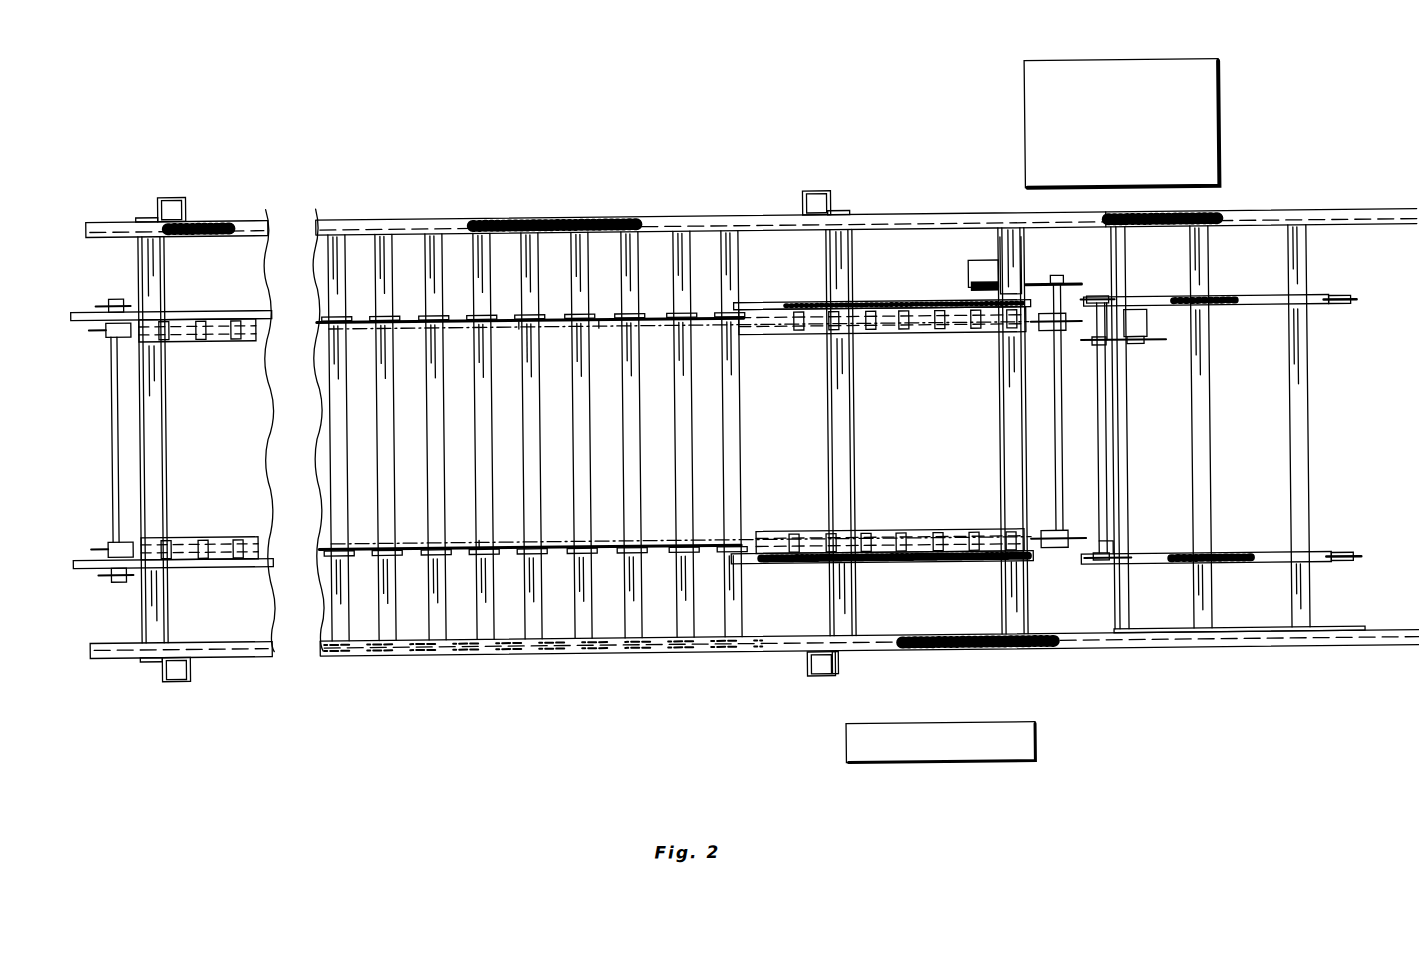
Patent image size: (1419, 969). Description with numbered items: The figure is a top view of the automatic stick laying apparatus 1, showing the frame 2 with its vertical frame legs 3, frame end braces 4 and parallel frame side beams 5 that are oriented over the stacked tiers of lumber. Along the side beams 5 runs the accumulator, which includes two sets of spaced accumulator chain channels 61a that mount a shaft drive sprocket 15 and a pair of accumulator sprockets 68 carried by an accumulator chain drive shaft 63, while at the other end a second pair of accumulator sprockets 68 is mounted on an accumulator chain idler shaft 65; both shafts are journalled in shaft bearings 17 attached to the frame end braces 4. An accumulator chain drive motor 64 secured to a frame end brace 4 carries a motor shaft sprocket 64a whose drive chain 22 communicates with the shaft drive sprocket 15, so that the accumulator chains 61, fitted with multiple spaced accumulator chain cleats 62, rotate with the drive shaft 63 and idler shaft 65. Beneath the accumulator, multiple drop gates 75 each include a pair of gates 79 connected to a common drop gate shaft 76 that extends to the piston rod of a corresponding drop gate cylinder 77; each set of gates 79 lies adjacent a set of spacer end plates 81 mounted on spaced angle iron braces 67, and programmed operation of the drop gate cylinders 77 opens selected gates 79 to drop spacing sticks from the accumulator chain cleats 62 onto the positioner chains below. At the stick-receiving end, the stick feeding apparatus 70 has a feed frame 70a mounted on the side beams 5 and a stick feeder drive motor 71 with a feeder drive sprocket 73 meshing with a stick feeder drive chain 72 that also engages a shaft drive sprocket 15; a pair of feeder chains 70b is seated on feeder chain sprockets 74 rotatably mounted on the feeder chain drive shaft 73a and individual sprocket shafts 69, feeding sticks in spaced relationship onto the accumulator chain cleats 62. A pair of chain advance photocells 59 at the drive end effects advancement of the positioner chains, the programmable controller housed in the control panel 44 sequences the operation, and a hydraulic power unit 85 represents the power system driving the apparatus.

The automatic stick laying apparatus 1 is at (1255, 56).
The frame 2 is at (195, 205).
The frame legs 3 is at (161, 197).
The frame end braces 4 is at (173, 404).
The frame side beams 5 is at (350, 216).
The shaft drive sprocket 15 is at (1063, 286).
The shaft bearings 17 is at (110, 296).
The drive chain 22 is at (1007, 260).
The control panel 44 is at (1036, 746).
The chain advance photocells 59 is at (915, 638).
The accumulator chains 61 is at (172, 314).
The accumulator chain channels 61a is at (232, 336).
The accumulator chain cleats 62 is at (237, 316).
The accumulator chain drive shaft 63 is at (1063, 441).
The accumulator chain drive motor 64 is at (972, 265).
The motor shaft sprocket 64a is at (973, 290).
The accumulator chain idler shaft 65 is at (112, 436).
The angle iron braces 67 is at (725, 563).
The accumulator sprockets 68 is at (108, 333).
The sprocket shafts 69 is at (1340, 302).
The stick feeding apparatus 70 is at (1274, 212).
The feed frame 70a is at (1309, 383).
The feeder chains 70b is at (1240, 302).
The stick feeder drive motor 71 is at (1148, 331).
The stick feeder drive chain 72 is at (1110, 349).
The feeder drive sprocket 73 is at (1135, 351).
The feeder chain drive shaft 73a is at (1112, 546).
The feeder chain sprockets 74 is at (1095, 300).
The drop gates 75 is at (598, 314).
The drop gate shaft 76 is at (377, 392).
The drop gate cylinders 77 is at (566, 660).
The gates 79 is at (498, 317).
The spacer end plates 81 is at (350, 316).
The hydraulic power unit 85 is at (1230, 145).